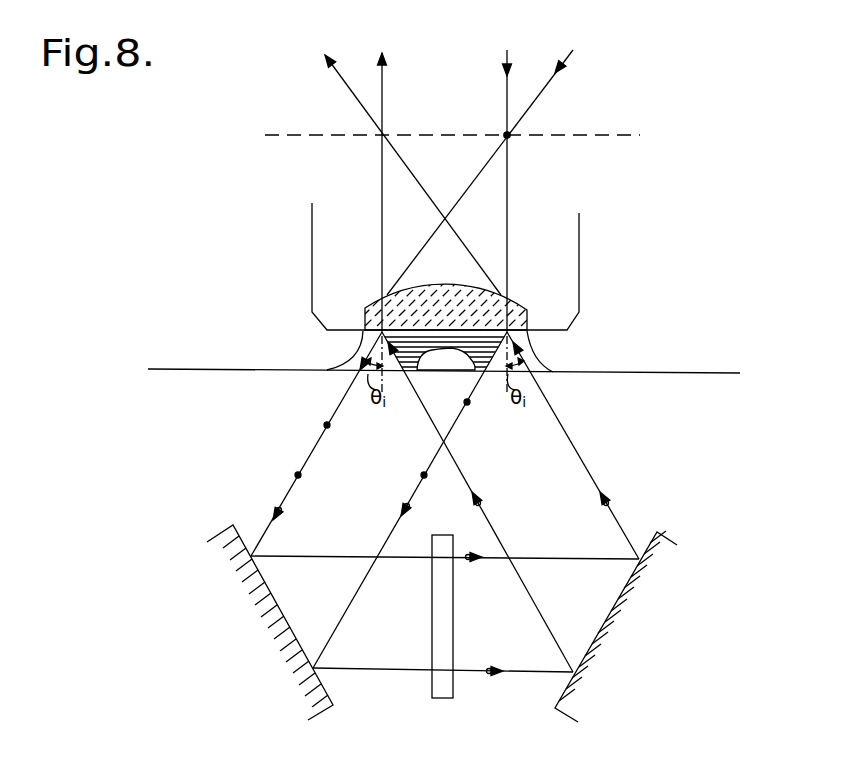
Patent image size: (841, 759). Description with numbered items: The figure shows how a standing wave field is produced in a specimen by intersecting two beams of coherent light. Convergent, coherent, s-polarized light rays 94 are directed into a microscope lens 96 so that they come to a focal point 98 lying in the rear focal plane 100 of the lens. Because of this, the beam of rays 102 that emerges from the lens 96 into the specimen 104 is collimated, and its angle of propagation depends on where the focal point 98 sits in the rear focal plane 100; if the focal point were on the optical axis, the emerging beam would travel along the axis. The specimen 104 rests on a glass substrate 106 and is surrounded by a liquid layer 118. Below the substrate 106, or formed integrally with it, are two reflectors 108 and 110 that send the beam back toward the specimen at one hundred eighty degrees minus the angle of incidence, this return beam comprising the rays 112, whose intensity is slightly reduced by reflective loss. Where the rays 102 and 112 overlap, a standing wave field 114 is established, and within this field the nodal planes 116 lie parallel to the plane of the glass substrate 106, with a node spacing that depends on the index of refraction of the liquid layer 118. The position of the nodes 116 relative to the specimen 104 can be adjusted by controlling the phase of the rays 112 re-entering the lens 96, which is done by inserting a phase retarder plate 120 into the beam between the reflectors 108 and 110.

The s-polarized light rays 94 is at (567, 53).
The microscope lens 96 is at (367, 312).
The focal point 98 is at (509, 137).
The rear focal plane 100 is at (477, 132).
The beam of rays 102 is at (414, 494).
The specimen 104 is at (446, 372).
The glass substrate 106 is at (645, 411).
The reflector 108 is at (276, 600).
The reflector 110 is at (616, 601).
The return beam rays 112 is at (590, 478).
The standing wave field 114 is at (487, 341).
The nodal planes 116 is at (444, 344).
The liquid layer 118 is at (355, 347).
The phase retarder plate 120 is at (455, 621).